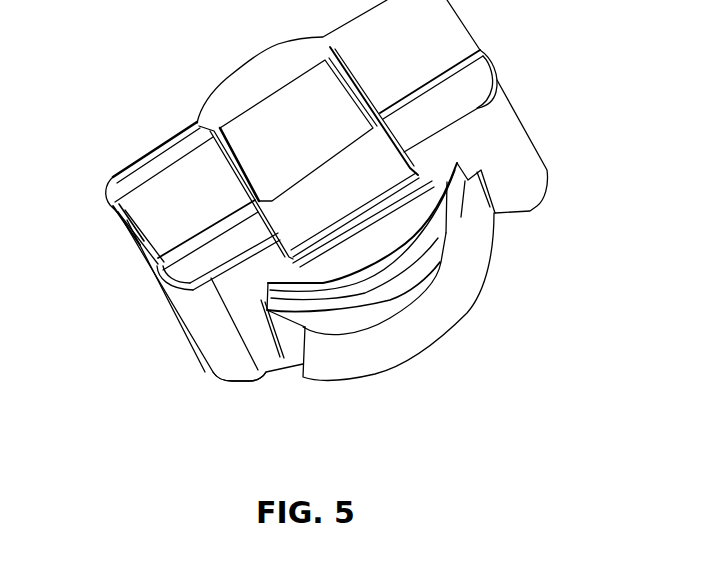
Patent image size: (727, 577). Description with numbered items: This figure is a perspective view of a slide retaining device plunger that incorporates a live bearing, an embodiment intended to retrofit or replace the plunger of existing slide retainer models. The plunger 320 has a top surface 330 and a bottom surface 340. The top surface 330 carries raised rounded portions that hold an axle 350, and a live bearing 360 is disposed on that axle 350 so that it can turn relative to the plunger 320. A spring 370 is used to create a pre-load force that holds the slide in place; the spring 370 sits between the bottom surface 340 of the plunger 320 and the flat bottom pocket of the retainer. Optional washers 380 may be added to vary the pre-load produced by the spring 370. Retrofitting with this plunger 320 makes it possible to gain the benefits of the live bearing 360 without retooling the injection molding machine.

The plunger 320 is at (181, 73).
The top surface 330 is at (147, 197).
The bottom surface 340 is at (218, 379).
The axle 350 is at (132, 247).
The live bearing 360 is at (272, 115).
The spring 370 is at (357, 362).
The washers 380 is at (303, 373).